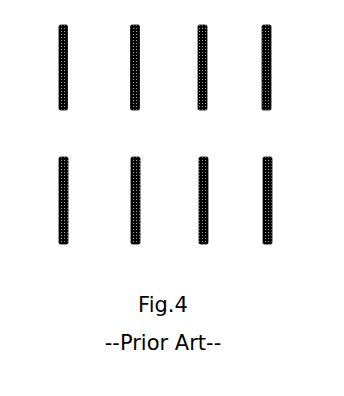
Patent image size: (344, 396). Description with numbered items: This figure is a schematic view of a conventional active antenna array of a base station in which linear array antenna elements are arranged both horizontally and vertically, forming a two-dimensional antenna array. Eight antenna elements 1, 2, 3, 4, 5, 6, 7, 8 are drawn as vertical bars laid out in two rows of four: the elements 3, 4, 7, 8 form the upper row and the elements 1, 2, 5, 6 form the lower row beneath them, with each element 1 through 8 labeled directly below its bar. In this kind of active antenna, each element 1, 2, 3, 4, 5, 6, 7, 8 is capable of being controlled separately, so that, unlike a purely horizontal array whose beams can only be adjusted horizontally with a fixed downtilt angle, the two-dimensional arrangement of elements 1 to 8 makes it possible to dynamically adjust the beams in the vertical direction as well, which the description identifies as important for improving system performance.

The electrode bar 1 is at (63, 215).
The electrode bar 2 is at (135, 215).
The electrode bar 3 is at (63, 83).
The electrode bar 4 is at (135, 83).
The electrode bar 5 is at (202, 215).
The electrode bar 6 is at (267, 215).
The electrode bar 7 is at (202, 83).
The electrode bar 8 is at (267, 83).